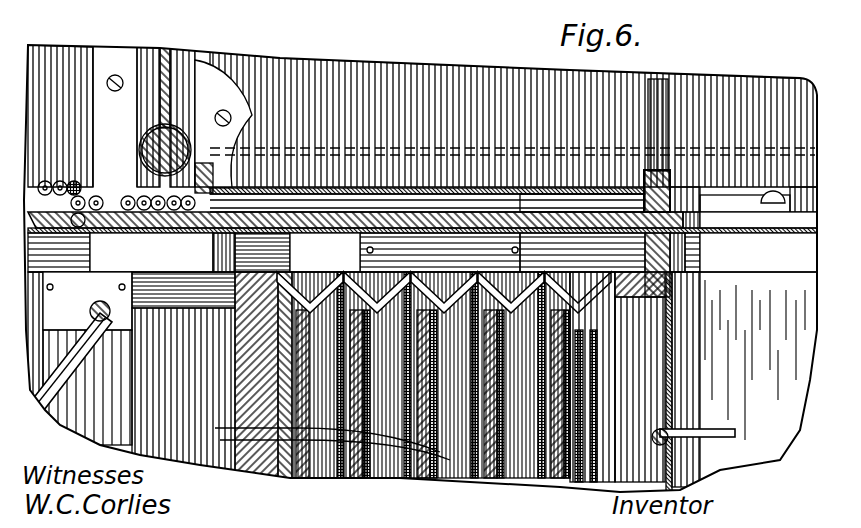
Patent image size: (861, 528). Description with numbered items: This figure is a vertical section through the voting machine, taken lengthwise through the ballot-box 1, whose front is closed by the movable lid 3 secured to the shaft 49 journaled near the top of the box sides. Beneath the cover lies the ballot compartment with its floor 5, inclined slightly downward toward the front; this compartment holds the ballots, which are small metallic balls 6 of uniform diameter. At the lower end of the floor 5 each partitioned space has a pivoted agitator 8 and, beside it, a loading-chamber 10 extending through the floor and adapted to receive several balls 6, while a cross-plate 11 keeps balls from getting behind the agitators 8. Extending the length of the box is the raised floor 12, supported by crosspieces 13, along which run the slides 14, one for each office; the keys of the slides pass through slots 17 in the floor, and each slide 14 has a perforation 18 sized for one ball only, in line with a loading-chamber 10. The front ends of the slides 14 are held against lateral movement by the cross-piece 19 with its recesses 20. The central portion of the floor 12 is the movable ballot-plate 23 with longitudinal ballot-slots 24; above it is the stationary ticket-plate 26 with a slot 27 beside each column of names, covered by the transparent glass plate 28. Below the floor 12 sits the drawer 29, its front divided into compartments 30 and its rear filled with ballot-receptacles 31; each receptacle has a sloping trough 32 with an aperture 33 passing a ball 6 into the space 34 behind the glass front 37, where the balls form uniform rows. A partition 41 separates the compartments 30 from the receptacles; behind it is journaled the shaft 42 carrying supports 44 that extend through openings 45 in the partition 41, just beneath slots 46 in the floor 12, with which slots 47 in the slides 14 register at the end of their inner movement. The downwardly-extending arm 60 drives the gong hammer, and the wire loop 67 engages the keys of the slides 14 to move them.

The ballot-box 1 is at (706, 82).
The movable lid 3 is at (160, 42).
The floor 5 is at (59, 252).
The metallic balls 6 is at (62, 190).
The agitator 8 is at (95, 182).
The loading-chamber 10 is at (70, 170).
The cross-plate 11 is at (233, 123).
The raised floor 12 is at (422, 237).
The crosspieces 13 is at (262, 252).
The slides 14 is at (540, 222).
The slots 17 is at (56, 164).
The perforation 18 is at (95, 242).
The cross-piece 19 is at (676, 196).
The recesses 20 is at (745, 218).
The ballot-plate 23 is at (215, 282).
The ballot-slots 24 is at (238, 312).
The ticket-plate 26 is at (264, 196).
The slot 27 is at (362, 226).
The glass plate 28 is at (322, 204).
The drawer 29 is at (800, 378).
The compartments 30 is at (185, 64).
The ballot-receptacles 31 is at (610, 497).
The trough 32 is at (350, 250).
The aperture 33 is at (183, 290).
The space 34 is at (316, 442).
The glass front 37 is at (568, 458).
The partition 41 is at (672, 344).
The shaft 42 is at (654, 434).
The supports 44 is at (712, 435).
The openings 45 is at (676, 474).
The slots 46 is at (758, 252).
The slots 47 is at (745, 191).
The shaft 49 is at (174, 138).
The downwardly-extending arm 60 is at (116, 416).
The loop 67 is at (78, 384).